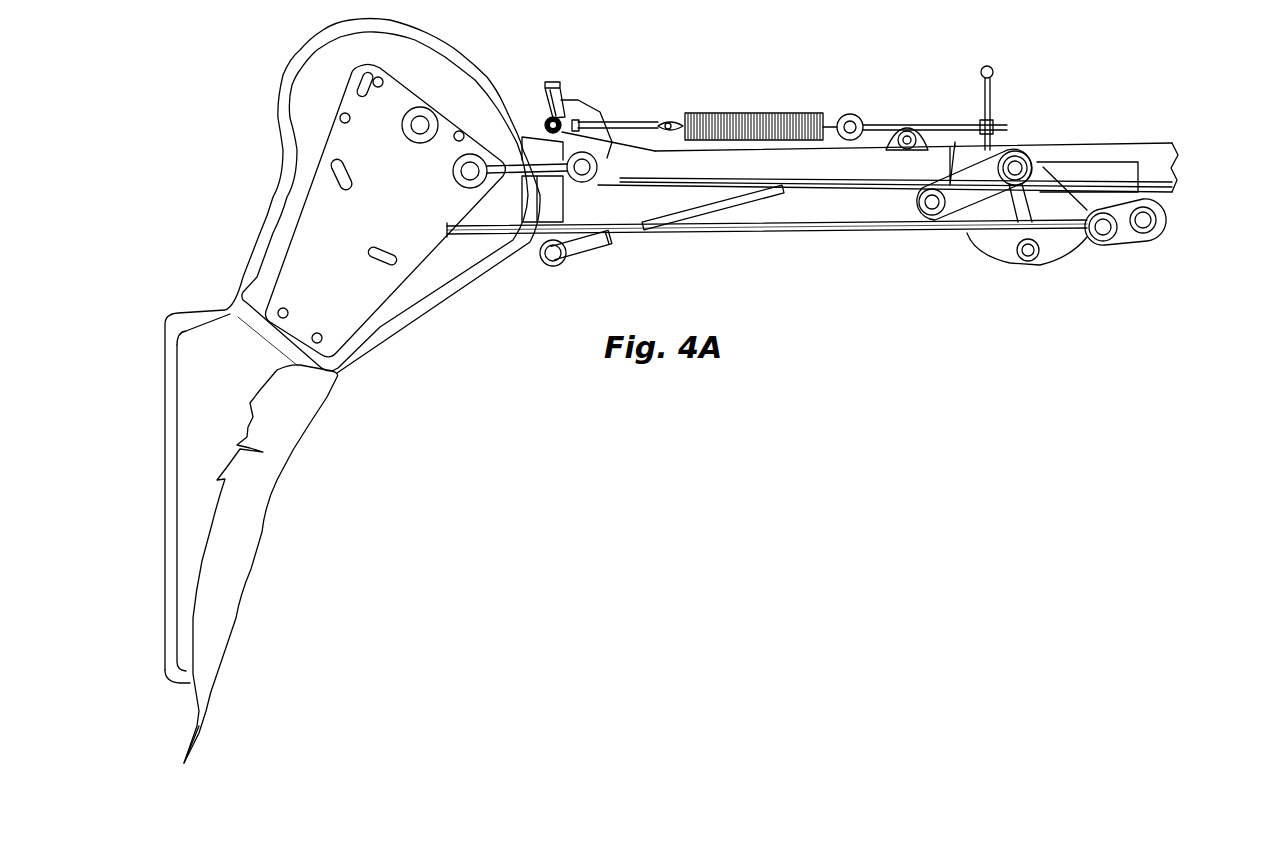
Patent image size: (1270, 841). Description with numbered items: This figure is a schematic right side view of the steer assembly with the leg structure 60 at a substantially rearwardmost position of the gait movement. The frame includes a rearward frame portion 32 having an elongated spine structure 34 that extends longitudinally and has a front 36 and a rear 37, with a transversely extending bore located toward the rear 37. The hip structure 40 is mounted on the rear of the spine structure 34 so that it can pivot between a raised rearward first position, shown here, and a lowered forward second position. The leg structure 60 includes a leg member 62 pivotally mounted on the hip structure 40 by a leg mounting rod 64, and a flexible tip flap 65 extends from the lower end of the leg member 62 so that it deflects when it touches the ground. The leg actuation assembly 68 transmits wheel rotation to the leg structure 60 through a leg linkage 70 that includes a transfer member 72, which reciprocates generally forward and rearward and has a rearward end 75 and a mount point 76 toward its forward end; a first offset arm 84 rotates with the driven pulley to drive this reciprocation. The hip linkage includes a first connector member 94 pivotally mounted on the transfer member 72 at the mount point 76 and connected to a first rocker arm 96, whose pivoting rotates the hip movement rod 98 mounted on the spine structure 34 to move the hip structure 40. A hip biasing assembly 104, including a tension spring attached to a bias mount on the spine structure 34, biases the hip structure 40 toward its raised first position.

The rearward frame portion 32 is at (604, 156).
The spine structure 34 is at (863, 160).
The front 36 is at (1010, 148).
The rear 37 is at (600, 178).
The hip structure 40 is at (514, 166).
The leg structure 60 is at (260, 540).
The leg member 62 is at (307, 282).
The leg mounting rod 64 is at (452, 180).
The tip flap 65 is at (201, 731).
The leg actuation assembly 68 is at (1165, 207).
The leg linkage 70 is at (891, 240).
The transfer member 72 is at (767, 228).
The rearward end 75 is at (450, 231).
The mount point 76 is at (1013, 258).
The first offset arm 84 is at (1080, 230).
The first connector member 94 is at (1022, 193).
The first rocker arm 96 is at (970, 176).
The hip movement rod 98 is at (932, 209).
The hip biasing assembly 104 is at (765, 114).